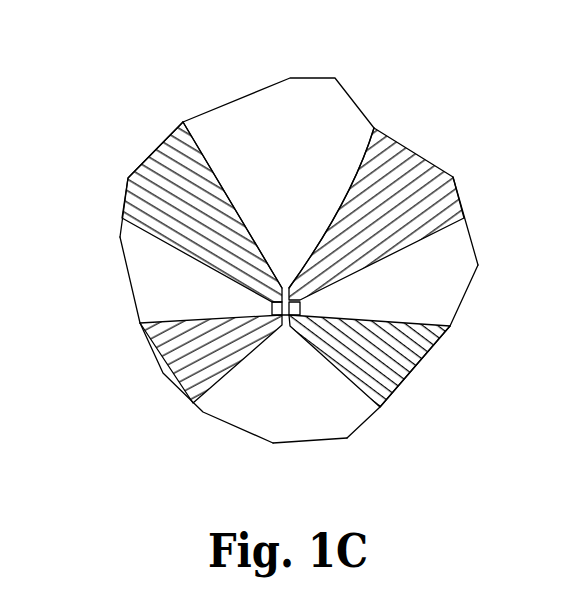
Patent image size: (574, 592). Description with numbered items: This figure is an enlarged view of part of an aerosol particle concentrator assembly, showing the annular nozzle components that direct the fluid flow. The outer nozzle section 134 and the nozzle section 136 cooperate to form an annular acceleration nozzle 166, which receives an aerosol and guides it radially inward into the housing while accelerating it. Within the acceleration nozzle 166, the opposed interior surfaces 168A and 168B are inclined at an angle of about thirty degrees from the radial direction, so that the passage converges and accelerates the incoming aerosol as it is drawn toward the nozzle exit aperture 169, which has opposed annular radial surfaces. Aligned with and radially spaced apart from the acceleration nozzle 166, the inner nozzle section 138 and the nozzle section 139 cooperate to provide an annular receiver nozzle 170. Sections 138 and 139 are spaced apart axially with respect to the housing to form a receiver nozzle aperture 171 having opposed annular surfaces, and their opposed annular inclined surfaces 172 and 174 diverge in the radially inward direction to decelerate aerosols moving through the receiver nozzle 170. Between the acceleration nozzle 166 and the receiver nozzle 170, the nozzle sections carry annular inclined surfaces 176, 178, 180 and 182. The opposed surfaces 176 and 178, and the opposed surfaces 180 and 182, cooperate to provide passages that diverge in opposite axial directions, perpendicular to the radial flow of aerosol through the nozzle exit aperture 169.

The outer nozzle section 134 is at (128, 184).
The nozzle section 136 is at (455, 180).
The inner nozzle section 138 is at (168, 366).
The nozzle section 139 is at (424, 370).
The annular acceleration nozzle 166 is at (339, 100).
The interior surface 168A is at (198, 164).
The interior surface 168B is at (362, 158).
The nozzle exit aperture 169 is at (310, 294).
The annular receiver nozzle 170 is at (347, 440).
The receiver nozzle aperture 171 is at (283, 328).
The annular inclined surface 172 is at (208, 388).
The annular inclined surface 174 is at (372, 395).
The annular inclined surface 176 is at (120, 238).
The annular inclined surface 178 is at (160, 325).
The annular inclined surface 180 is at (425, 232).
The annular inclined surface 182 is at (437, 319).